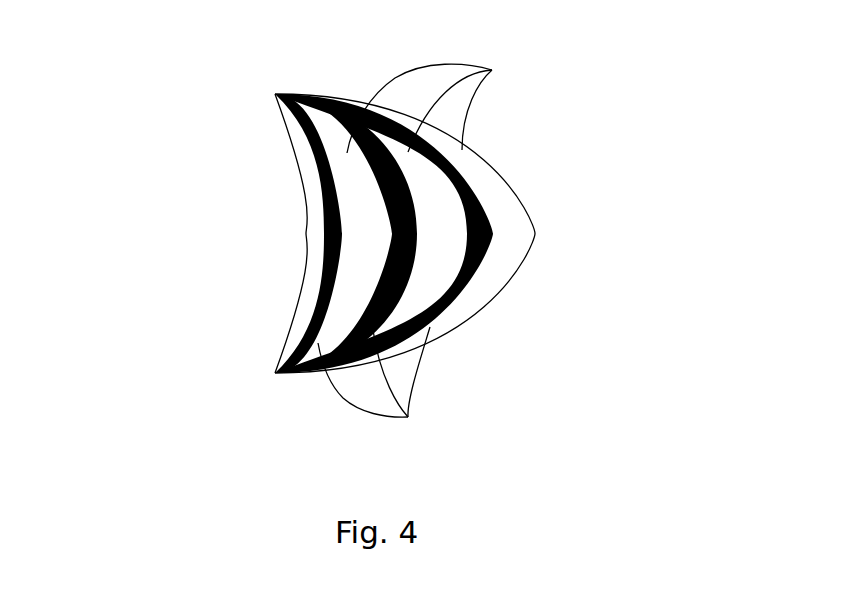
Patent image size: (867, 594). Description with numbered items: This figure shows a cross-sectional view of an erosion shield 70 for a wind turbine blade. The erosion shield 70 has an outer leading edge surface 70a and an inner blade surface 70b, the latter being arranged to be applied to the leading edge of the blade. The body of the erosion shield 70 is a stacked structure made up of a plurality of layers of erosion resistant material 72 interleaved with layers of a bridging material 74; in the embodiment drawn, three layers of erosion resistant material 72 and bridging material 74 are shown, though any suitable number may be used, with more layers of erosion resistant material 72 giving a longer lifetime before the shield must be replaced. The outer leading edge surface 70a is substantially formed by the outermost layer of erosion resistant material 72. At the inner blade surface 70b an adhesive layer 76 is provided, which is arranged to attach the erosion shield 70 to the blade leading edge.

The erosion shield 70 is at (155, 85).
The outer leading edge surface 70a is at (565, 240).
The inner blade surface 70b is at (237, 264).
The erosion resistant material 72 is at (435, 103).
The bridging material 74 is at (383, 385).
The adhesive layer 76 is at (313, 197).